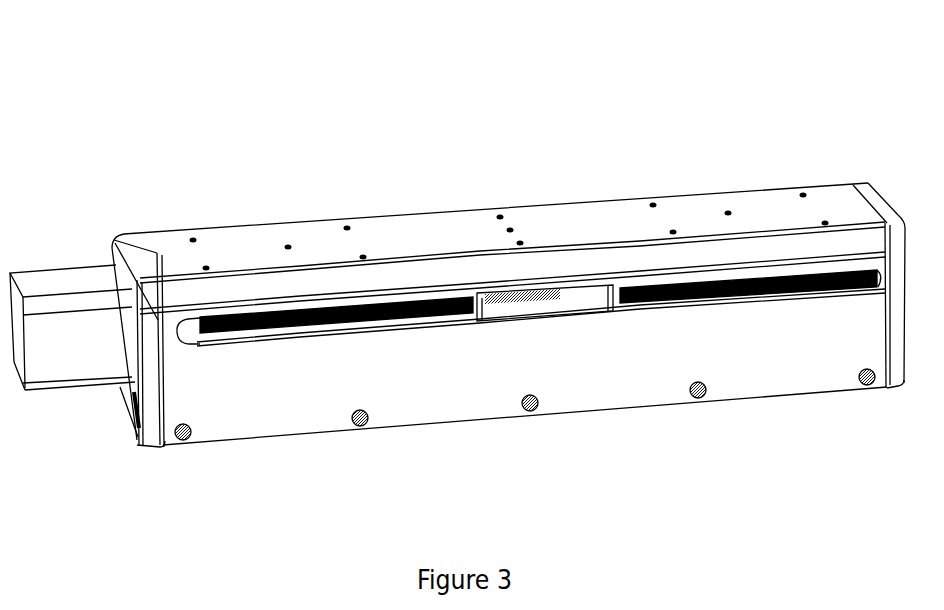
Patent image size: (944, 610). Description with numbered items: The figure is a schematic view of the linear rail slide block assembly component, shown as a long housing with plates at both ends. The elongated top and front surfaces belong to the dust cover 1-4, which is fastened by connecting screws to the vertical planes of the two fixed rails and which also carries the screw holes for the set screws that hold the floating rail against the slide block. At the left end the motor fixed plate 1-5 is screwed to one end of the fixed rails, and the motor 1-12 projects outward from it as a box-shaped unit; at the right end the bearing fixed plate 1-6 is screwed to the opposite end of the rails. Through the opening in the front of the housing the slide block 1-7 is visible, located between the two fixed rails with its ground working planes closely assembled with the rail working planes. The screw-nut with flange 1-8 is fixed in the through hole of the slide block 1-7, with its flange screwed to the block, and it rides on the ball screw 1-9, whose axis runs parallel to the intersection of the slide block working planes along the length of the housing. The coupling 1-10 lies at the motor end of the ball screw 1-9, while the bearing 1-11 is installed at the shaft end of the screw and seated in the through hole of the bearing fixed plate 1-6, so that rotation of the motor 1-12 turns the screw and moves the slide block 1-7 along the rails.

The dust cover 1-4 is at (587, 218).
The motor fixed plate 1-5 is at (135, 262).
The bearing fixed plate 1-6 is at (873, 200).
The slide block 1-7 is at (568, 300).
The screw-nut with flange 1-8 is at (617, 299).
The ball screw 1-9 is at (398, 310).
The coupling 1-10 is at (193, 330).
The bearing 1-11 is at (868, 285).
The motor 1-12 is at (45, 278).